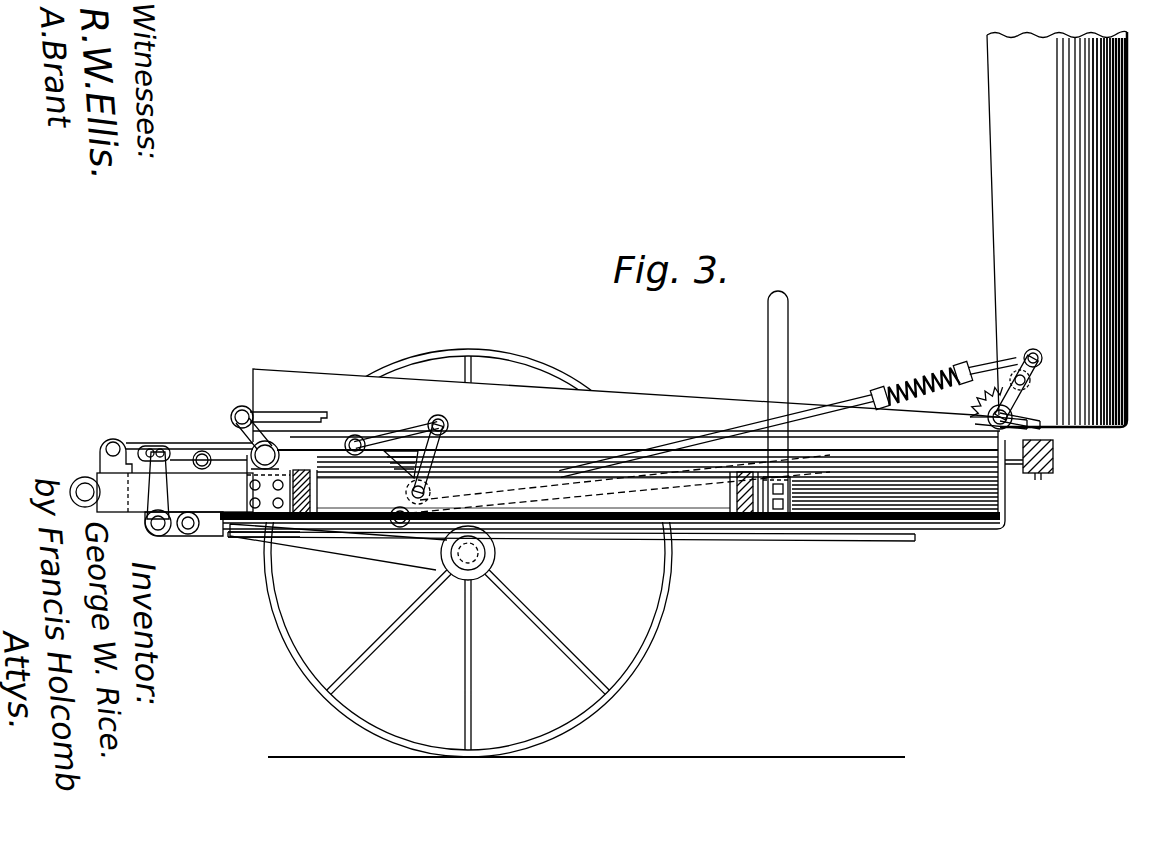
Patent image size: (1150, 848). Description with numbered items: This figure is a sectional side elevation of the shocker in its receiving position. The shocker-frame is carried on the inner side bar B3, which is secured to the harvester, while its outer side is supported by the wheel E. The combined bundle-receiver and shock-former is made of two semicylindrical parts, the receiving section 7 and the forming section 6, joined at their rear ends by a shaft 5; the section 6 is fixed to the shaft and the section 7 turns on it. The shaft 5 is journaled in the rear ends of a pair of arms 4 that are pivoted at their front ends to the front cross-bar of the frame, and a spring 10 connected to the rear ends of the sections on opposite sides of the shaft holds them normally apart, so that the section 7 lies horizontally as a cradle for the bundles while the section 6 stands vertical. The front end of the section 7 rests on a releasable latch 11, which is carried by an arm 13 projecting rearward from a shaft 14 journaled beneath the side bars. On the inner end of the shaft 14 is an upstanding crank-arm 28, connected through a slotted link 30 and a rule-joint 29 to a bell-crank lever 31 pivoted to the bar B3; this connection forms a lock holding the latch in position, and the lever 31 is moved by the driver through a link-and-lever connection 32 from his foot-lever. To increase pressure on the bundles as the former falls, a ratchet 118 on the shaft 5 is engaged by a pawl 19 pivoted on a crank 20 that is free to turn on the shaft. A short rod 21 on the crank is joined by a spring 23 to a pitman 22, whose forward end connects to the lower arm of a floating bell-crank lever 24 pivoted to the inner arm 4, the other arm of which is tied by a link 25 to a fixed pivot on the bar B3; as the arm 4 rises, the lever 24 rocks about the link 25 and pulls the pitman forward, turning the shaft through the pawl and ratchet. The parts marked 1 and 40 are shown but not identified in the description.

The frame bar 1 is at (87, 508).
The arms 4 is at (1013, 462).
The shaft 5 is at (1047, 445).
The forming section 6 is at (998, 238).
The receiving section 7 is at (950, 522).
The spring 10 is at (1038, 462).
The latch 11 is at (222, 532).
The arm 13 is at (183, 537).
The shaft 14 is at (162, 528).
The pawl 19 is at (1017, 357).
The crank 20 is at (1035, 424).
The short rod 21 is at (987, 367).
The pitman 22 is at (826, 405).
The spring 23 is at (905, 386).
The floating bell-crank lever 24 is at (430, 432).
The link 25 is at (430, 458).
The crank-arm 28 is at (155, 478).
The rule-joint 29 is at (203, 452).
The slotted link 30 is at (175, 447).
The bell-crank lever 31 is at (221, 447).
The link-and-lever connection 32 is at (312, 413).
The bar 40 is at (850, 541).
The ratchet 118 is at (972, 372).
The inner side bar B3 is at (700, 497).
The wheel E is at (662, 623).